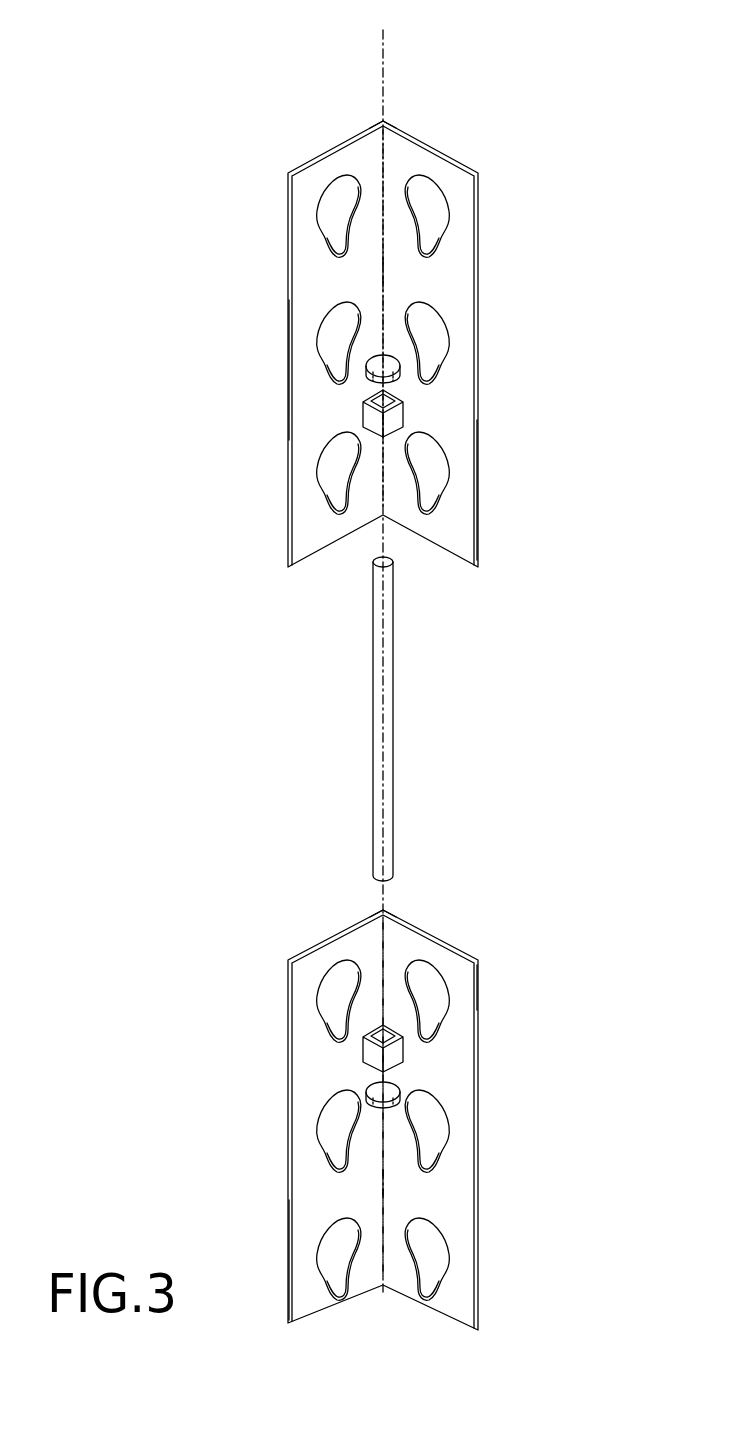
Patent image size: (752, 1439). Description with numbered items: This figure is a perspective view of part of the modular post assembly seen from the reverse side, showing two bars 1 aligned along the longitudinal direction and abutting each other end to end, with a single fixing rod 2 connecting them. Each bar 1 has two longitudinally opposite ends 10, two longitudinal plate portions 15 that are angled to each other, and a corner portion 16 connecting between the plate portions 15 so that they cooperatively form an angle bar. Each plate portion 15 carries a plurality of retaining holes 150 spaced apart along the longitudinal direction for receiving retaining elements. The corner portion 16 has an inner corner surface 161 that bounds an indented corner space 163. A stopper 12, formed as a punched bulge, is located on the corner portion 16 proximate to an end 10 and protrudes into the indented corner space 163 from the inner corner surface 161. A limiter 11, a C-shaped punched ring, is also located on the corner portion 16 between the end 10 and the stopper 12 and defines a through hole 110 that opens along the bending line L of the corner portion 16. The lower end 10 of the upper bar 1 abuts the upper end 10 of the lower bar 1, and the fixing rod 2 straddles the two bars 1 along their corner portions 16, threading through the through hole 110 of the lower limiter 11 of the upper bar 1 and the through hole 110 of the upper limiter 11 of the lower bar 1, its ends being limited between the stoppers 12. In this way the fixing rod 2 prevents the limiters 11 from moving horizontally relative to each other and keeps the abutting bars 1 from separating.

The bending line L is at (383, 646).
The bar 1 is at (257, 387).
The fixing rod 2 is at (383, 677).
The end 10 is at (436, 548).
The limiter 11 is at (396, 418).
The stopper 12 is at (386, 367).
The through hole 110 is at (390, 402).
The longitudinal plate portion 15 is at (306, 415).
The corner portion 16 is at (387, 120).
The retaining hole 150 is at (337, 215).
The inner corner surface 161 is at (386, 218).
The indented corner space 163 is at (392, 269).